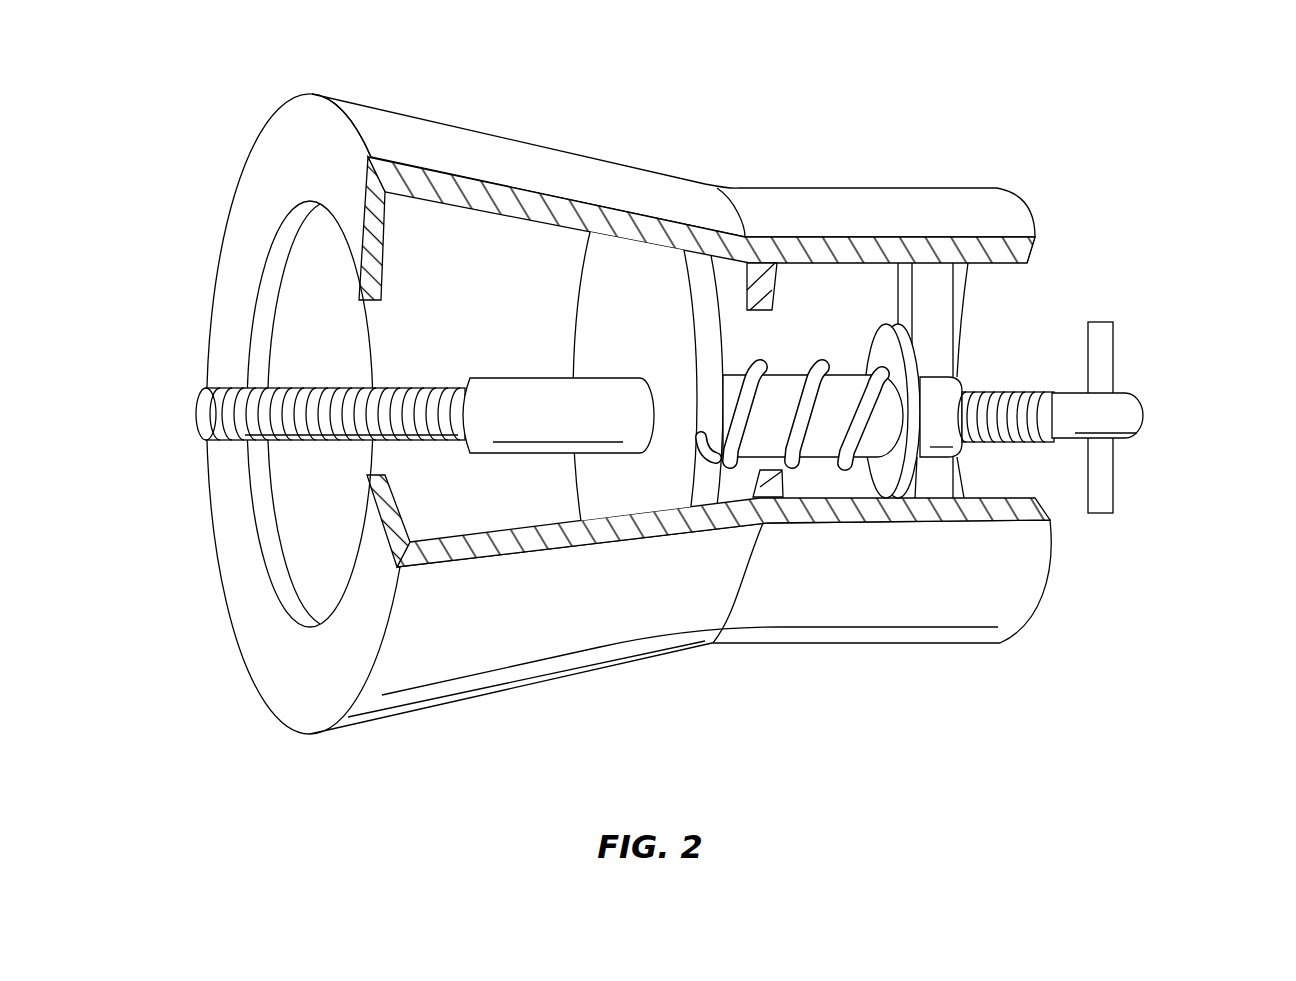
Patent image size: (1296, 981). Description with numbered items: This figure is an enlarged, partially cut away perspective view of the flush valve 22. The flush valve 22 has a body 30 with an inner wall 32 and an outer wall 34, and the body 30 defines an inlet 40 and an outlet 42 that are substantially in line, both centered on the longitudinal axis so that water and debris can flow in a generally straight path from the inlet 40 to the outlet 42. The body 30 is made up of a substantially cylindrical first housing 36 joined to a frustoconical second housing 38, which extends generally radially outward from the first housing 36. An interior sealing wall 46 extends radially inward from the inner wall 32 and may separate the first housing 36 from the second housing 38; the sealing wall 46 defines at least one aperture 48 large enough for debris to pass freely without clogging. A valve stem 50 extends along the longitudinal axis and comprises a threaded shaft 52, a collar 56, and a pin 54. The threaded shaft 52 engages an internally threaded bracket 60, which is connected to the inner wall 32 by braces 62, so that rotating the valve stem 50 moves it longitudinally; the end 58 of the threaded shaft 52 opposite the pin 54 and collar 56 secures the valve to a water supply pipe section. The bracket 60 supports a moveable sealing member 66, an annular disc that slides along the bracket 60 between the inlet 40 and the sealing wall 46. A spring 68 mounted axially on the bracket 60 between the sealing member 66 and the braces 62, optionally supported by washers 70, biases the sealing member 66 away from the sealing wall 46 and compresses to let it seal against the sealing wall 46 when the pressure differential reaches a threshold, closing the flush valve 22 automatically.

The flush valve 22 is at (684, 418).
The body 30 is at (587, 445).
The inner wall 32 is at (618, 185).
The outer wall 34 is at (540, 190).
The first housing 36 is at (888, 661).
The second housing 38 is at (680, 647).
The inlet 40 is at (301, 503).
The outlet 42 is at (1056, 380).
The sealing wall 46 is at (777, 287).
The aperture 48 is at (464, 444).
The valve stem 50 is at (1164, 431).
The threaded shaft 52 is at (1032, 437).
The pin 54 is at (1107, 497).
The collar 56 is at (1130, 427).
The end of the threaded shaft 58 is at (225, 387).
The bracket 60 is at (530, 377).
The brace 62 is at (940, 332).
The moveable sealing member 66 is at (650, 277).
The spring 68 is at (813, 490).
The washer 70 is at (913, 470).